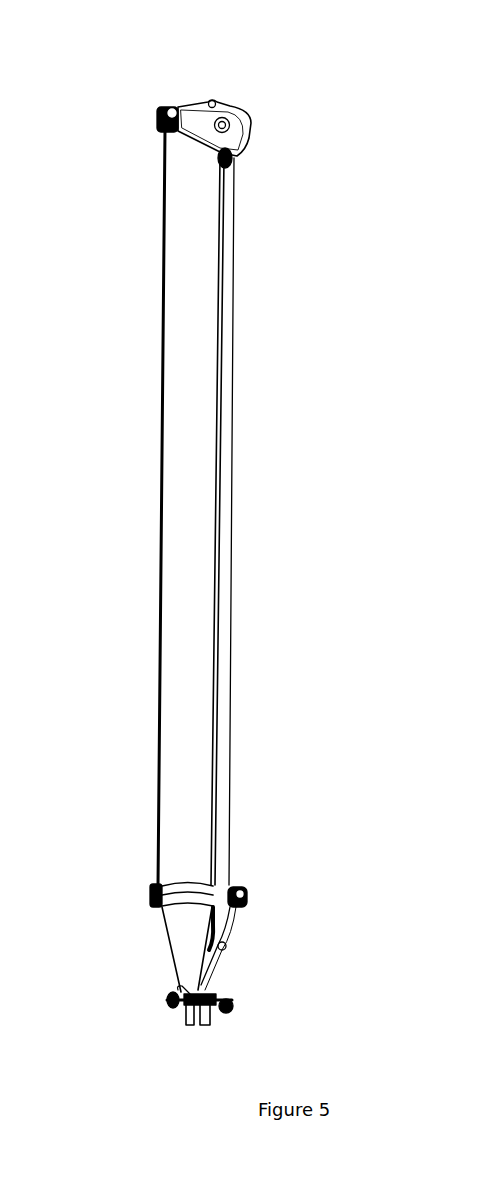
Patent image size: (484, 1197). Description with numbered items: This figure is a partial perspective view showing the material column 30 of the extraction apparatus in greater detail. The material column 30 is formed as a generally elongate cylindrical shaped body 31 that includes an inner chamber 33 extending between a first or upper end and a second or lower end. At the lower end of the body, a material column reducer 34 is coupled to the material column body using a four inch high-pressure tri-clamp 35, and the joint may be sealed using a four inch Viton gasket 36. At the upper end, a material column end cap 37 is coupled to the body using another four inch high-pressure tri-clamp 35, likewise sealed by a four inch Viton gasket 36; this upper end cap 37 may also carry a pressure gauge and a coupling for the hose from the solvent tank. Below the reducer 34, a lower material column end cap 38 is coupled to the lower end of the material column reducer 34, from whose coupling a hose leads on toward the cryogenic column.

The material column 30 is at (135, 381).
The elongate cylindrical shaped body 31 is at (232, 505).
The inner chamber 33 is at (178, 608).
The material column reducer 34 is at (165, 942).
The high-pressure tri-clamp 35 is at (247, 147).
The Viton gasket 36 is at (232, 167).
The material column end cap 37 is at (193, 122).
The material column end cap 38 is at (177, 1007).